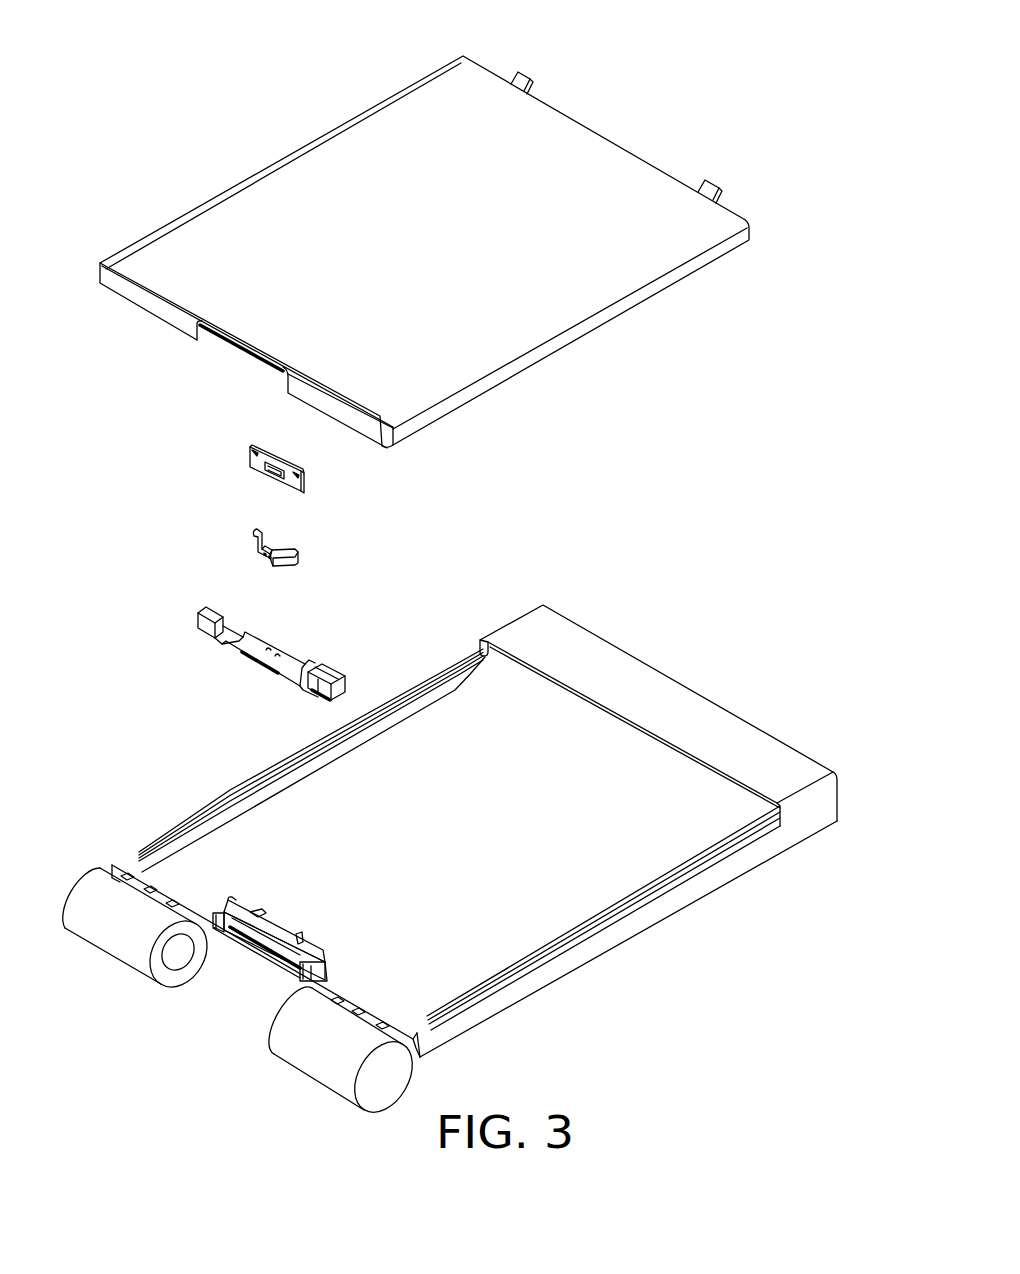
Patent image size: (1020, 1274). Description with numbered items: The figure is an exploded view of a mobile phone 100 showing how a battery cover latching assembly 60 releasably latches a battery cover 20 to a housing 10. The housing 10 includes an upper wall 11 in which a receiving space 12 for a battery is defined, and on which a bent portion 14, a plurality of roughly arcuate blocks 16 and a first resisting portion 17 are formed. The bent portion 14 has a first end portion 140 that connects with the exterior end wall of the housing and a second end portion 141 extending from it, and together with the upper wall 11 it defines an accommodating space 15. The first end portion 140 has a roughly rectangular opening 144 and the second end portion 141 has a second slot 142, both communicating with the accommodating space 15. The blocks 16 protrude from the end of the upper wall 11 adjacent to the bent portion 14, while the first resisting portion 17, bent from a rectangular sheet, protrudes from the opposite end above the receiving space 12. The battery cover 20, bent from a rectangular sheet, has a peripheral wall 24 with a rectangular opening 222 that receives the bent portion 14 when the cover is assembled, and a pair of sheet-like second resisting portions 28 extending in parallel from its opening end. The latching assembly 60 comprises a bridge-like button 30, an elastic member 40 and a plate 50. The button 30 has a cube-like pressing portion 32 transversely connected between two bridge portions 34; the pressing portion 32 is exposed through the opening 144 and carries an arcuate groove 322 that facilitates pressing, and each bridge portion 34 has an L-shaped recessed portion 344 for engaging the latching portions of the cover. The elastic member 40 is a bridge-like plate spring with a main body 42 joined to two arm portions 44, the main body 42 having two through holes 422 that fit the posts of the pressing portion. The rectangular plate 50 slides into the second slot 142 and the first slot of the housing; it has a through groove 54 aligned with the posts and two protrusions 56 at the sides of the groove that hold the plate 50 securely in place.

The mobile phone 100 is at (450, 31).
The housing 10 is at (670, 650).
The upper wall 11 is at (430, 1036).
The receiving space 12 is at (648, 868).
The bent portion 14 is at (240, 905).
The first end portion 140 is at (302, 980).
The second end portion 141 is at (222, 906).
The second slot 142 is at (280, 928).
The opening 144 is at (243, 932).
The accommodating space 15 is at (318, 968).
The blocks 16 is at (383, 1018).
The first resisting portion 17 is at (735, 743).
The battery cover 20 is at (288, 137).
The opening 222 is at (218, 341).
The peripheral wall 24 is at (138, 300).
The second resisting portions 28 is at (528, 80).
The button 30 is at (196, 606).
The pressing portion 32 is at (222, 645).
The arcuate groove 322 is at (255, 668).
The bridge portions 34 is at (340, 684).
The recessed portion 344 is at (340, 700).
The elastic member 40 is at (243, 534).
The main body 42 is at (271, 545).
The through holes 422 is at (262, 559).
The arm portions 44 is at (300, 552).
The plate 50 is at (238, 454).
The through groove 54 is at (266, 477).
The protrusions 56 is at (250, 448).
The battery cover latching assembly 60 is at (129, 426).